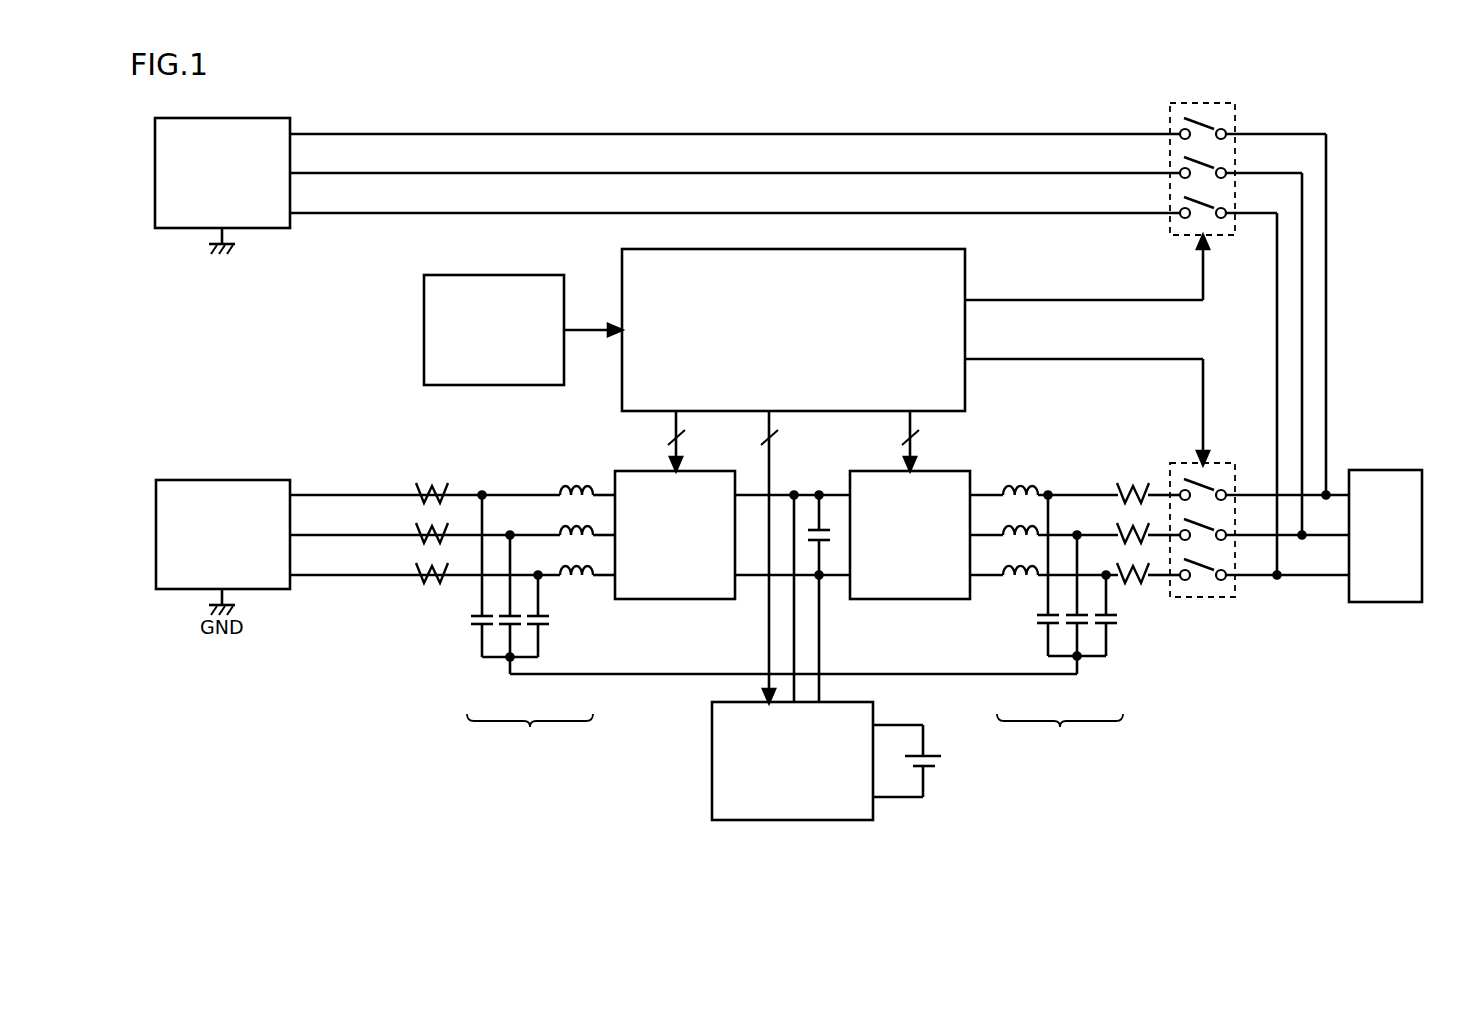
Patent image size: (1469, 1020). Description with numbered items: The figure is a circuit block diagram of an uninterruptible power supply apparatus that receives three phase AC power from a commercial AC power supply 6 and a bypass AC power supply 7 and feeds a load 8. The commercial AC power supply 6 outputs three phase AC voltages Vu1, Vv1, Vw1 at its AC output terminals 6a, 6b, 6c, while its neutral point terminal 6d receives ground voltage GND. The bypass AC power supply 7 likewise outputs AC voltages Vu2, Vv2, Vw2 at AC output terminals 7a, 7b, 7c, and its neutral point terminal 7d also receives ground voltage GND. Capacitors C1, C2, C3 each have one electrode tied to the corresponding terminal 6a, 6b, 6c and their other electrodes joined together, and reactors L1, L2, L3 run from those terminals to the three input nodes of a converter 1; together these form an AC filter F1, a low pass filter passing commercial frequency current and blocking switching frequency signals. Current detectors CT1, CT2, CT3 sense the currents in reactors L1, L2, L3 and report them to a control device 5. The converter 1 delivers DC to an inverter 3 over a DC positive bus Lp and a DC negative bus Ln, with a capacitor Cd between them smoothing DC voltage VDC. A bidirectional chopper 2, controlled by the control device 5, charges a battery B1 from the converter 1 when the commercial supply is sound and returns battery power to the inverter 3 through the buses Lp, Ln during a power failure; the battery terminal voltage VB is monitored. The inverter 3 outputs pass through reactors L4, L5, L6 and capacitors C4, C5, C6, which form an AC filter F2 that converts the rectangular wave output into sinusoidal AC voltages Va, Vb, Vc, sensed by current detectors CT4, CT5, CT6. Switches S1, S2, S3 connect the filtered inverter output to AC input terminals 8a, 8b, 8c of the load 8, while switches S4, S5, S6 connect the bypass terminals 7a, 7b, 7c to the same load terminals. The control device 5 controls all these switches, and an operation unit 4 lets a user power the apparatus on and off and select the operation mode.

The converter 1 is at (633, 471).
The bidirectional chopper 2 is at (712, 757).
The inverter 3 is at (878, 471).
The operation unit 4 is at (443, 275).
The control device 5 is at (928, 249).
The commercial AC power supply 6 is at (185, 480).
The AC output terminal 6a is at (292, 495).
The AC output terminal 6b is at (292, 535).
The AC output terminal 6c is at (292, 575).
The neutral point terminal 6d is at (228, 594).
The bypass AC power supply 7 is at (185, 118).
The AC output terminal 7a is at (292, 134).
The AC output terminal 7b is at (292, 173).
The AC output terminal 7c is at (292, 213).
The neutral point terminal 7d is at (228, 233).
The load 8 is at (1403, 470).
The AC input terminal 8a is at (1348, 492).
The AC input terminal 8b is at (1348, 538).
The AC input terminal 8c is at (1348, 580).
The switch S1 is at (1203, 485).
The switch S2 is at (1203, 525).
The switch S3 is at (1203, 565).
The switch S4 is at (1203, 124).
The switch S5 is at (1203, 163).
The switch S6 is at (1203, 203).
The current detector CT1 is at (428, 486).
The current detector CT2 is at (436, 527).
The current detector CT3 is at (428, 583).
The current detector CT4 is at (1131, 486).
The current detector CT5 is at (1147, 526).
The current detector CT6 is at (1143, 583).
The reactor L1 is at (570, 484).
The reactor L2 is at (570, 524).
The reactor L3 is at (570, 564).
The reactor L4 is at (1014, 484).
The reactor L5 is at (1014, 524).
The reactor L6 is at (1014, 564).
The capacitor C1 is at (480, 628).
The capacitor C2 is at (506, 628).
The capacitor C3 is at (541, 628).
The capacitor C4 is at (1046, 628).
The capacitor C5 is at (1073, 628).
The capacitor C6 is at (1109, 628).
The capacitor Cd is at (824, 543).
The battery B1 is at (932, 755).
The AC filter F1 is at (530, 734).
The AC filter F2 is at (1060, 734).
The DC positive bus Lp is at (751, 493).
The DC negative bus Ln is at (750, 577).
The DC voltage VDC is at (808, 493).
The terminal-to-terminal voltage VB is at (910, 724).
The AC voltage Vu1 is at (370, 494).
The AC voltage Vv1 is at (375, 536).
The AC voltage Vw1 is at (338, 576).
The AC voltage Vu2 is at (505, 133).
The AC voltage Vv2 is at (505, 172).
The AC voltage Vw2 is at (505, 212).
The AC voltage Va is at (1048, 493).
The AC voltage Vb is at (1078, 533).
The AC voltage Vc is at (1105, 578).
The ground voltage GND is at (222, 265).